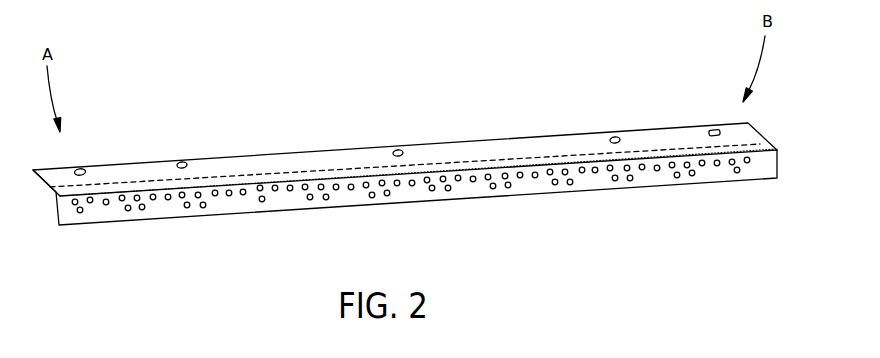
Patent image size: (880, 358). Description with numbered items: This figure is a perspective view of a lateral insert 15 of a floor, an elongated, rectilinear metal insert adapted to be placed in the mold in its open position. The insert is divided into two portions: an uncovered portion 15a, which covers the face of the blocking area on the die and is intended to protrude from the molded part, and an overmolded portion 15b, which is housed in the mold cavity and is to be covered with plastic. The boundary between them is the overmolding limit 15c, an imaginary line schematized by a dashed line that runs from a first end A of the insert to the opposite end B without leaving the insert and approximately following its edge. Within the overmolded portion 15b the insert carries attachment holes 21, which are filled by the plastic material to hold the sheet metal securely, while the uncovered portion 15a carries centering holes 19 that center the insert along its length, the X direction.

The lateral insert 15 is at (216, 266).
The uncovered portion 15a is at (440, 158).
The overmolded portion 15b is at (656, 181).
The overmolding limit 15c is at (357, 172).
The centering holes 19 is at (83, 167).
The attachment holes 21 is at (308, 200).